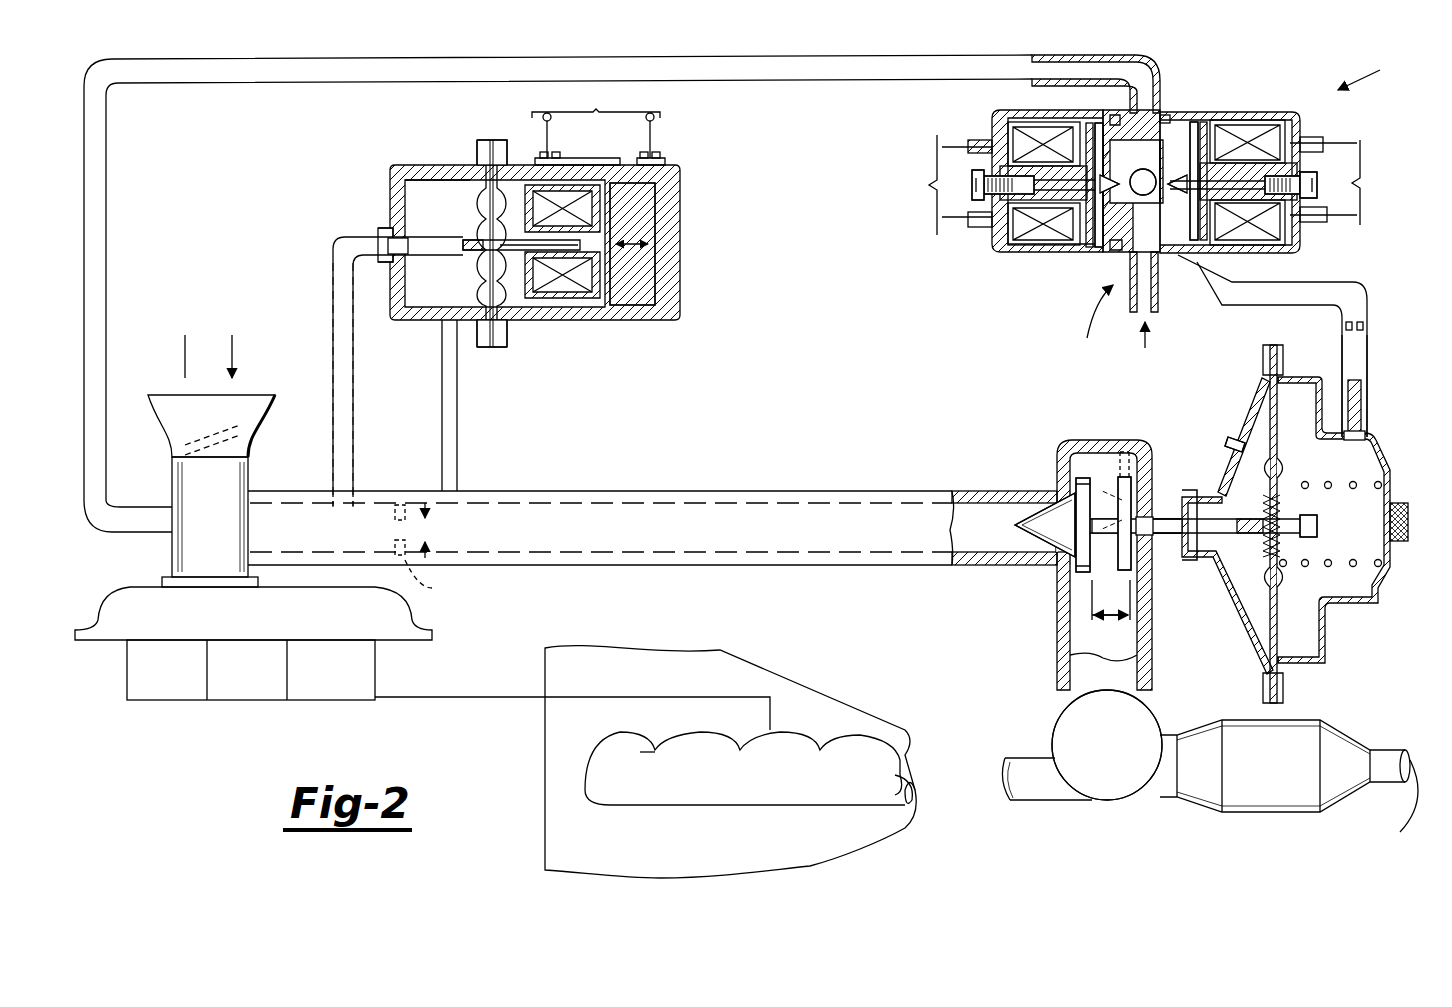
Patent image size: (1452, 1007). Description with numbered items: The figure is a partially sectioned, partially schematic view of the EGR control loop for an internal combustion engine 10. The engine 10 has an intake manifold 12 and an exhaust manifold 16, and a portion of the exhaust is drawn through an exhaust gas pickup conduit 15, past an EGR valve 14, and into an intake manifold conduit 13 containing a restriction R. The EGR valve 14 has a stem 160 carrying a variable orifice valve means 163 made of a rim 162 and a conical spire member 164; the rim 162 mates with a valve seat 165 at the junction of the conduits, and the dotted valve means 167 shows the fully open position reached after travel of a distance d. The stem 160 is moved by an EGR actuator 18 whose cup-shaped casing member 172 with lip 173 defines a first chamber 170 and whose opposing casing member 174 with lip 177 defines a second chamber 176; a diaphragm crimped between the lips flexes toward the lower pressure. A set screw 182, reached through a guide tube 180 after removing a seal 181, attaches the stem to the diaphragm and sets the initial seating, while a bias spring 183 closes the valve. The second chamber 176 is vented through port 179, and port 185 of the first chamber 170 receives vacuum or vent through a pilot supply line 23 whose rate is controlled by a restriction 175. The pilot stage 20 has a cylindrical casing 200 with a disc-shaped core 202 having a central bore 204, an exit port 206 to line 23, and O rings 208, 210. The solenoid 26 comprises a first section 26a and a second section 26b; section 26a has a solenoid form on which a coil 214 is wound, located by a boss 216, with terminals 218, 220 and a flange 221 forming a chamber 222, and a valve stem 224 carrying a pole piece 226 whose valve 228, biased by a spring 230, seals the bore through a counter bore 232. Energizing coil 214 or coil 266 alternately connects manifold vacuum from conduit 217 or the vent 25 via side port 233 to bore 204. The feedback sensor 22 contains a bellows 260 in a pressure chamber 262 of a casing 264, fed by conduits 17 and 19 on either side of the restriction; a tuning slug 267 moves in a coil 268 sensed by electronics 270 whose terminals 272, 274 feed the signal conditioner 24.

The internal combustion engine 10 is at (793, 692).
The intake manifold 12 is at (160, 558).
The intake manifold conduit 13 is at (880, 490).
The EGR valve 14 is at (1170, 540).
The exhaust gas pickup conduit 15 is at (1062, 648).
The exhaust manifold 16 is at (915, 778).
The pressure sensor conduit 17 is at (460, 438).
The EGR actuator 18 is at (1310, 524).
The pressure sensor conduit 19 is at (333, 375).
The pilot stage 20 is at (1106, 200).
The feedback sensor 22 is at (552, 241).
The pilot supply line 23 is at (1368, 348).
The signal conditioner 24 is at (675, 102).
The vent 25 is at (1107, 324).
The solenoid 26 is at (1373, 68).
The first solenoid section 26a is at (986, 217).
The second solenoid section 26b is at (1283, 145).
The valve stem 160 is at (1183, 500).
The rim 162 is at (1098, 478).
The variable orifice valve means 163 is at (1085, 578).
The spire member 164 is at (1047, 518).
The valve seat 165 is at (1083, 478).
The dotted valve means 167 is at (1126, 470).
The first chamber 170 is at (1278, 400).
The cup-shaped casing member 172 is at (1325, 638).
The lip 173 is at (1283, 688).
The opposing casing member 174 is at (1245, 650).
The restriction 175 is at (1367, 322).
The second chamber 176 is at (1263, 588).
The lip 177 is at (1265, 686).
The port 179 is at (1235, 435).
The guide tube 180 is at (1300, 535).
The seal 181 is at (1408, 512).
The set screw 182 is at (1288, 518).
The bias spring 183 is at (1330, 565).
The port 185 is at (1352, 440).
The cylindrical casing 200 is at (1290, 282).
The core 202 is at (1117, 223).
The central coaxial bore 204 is at (1175, 128).
The exit port 206 is at (1143, 198).
The O ring 208 is at (1170, 45).
The O ring 210 is at (1198, 130).
The coil 214 is at (1015, 237).
The boss 216 is at (990, 135).
The manifold vacuum conduit 217 is at (872, 62).
The terminal 218 is at (950, 148).
The terminal 220 is at (940, 222).
The flange 221 is at (1103, 92).
The chamber 222 is at (1088, 125).
The valve stem 224 is at (1005, 232).
The pole piece 226 is at (1045, 232).
The valve 228 is at (1140, 166).
The spring 230 is at (1102, 248).
The counter bore 232 is at (1165, 112).
The side port 233 is at (1150, 272).
The bellows 260 is at (488, 200).
The pressure chamber 262 is at (405, 180).
The casing 264 is at (390, 198).
The coil 266 is at (1300, 180).
The tuning slug 267 is at (548, 258).
The coil 268 is at (570, 292).
The electronics 270 is at (640, 212).
The terminal 272 is at (548, 145).
The terminal 274 is at (654, 145).